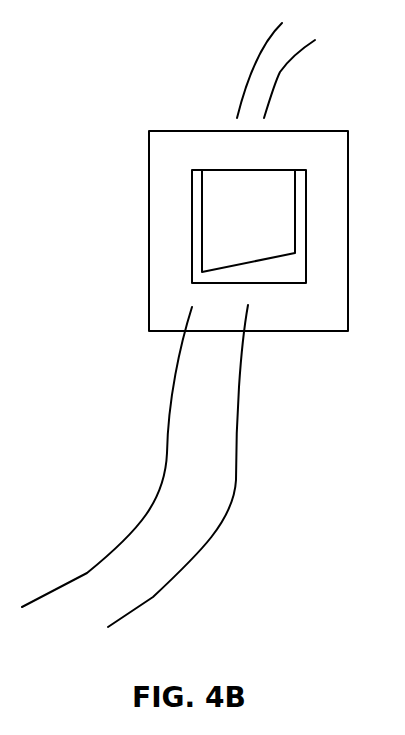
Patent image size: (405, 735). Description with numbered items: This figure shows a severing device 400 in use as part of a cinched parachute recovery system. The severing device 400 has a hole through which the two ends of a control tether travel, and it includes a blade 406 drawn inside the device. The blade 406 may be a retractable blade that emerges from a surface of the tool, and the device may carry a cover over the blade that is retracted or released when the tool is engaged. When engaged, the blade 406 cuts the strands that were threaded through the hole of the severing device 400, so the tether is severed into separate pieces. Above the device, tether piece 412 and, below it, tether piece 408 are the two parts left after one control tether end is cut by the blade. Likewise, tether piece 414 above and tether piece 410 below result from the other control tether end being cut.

The severing device 400 is at (148, 152).
The blade 406 is at (202, 217).
The tether piece 408 is at (167, 452).
The tether piece 410 is at (227, 520).
The tether piece 412 is at (262, 53).
The tether piece 414 is at (280, 75).